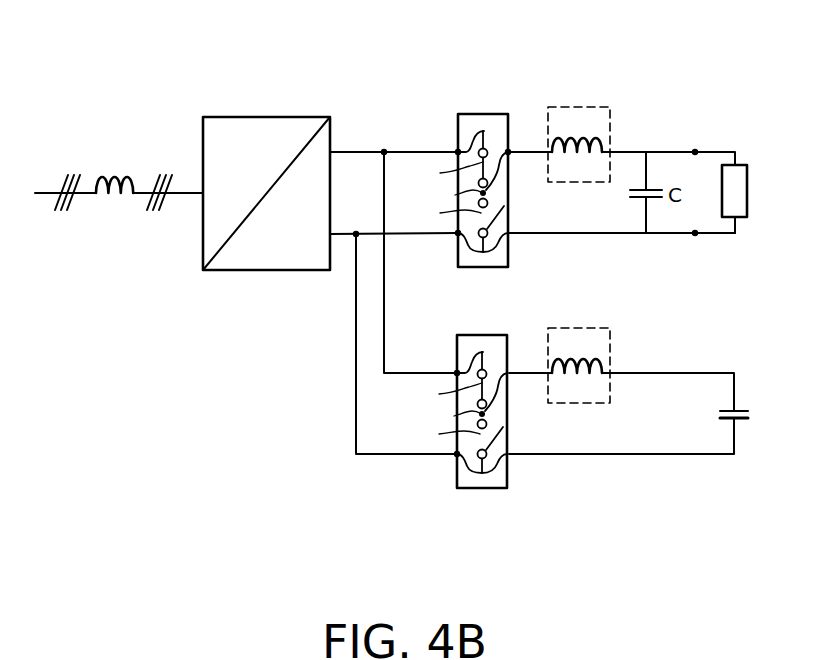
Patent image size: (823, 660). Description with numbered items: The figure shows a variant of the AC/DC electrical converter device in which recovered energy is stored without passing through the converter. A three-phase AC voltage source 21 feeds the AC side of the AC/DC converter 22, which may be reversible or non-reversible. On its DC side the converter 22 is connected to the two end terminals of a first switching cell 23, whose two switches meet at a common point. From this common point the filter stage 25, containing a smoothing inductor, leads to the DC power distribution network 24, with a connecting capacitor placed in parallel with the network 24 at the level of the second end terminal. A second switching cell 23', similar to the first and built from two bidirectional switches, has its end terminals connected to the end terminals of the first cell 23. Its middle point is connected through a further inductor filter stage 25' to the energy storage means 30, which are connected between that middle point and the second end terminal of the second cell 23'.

The AC voltage source 21 is at (62, 229).
The AC/DC converter 22 is at (238, 258).
The switching cell 23 is at (467, 155).
The DC power distribution network 24 is at (737, 206).
The filter stage 25 is at (587, 112).
The second switching cell 23' is at (456, 443).
The filter stage 25' is at (589, 333).
The energy storage means 30 is at (740, 418).